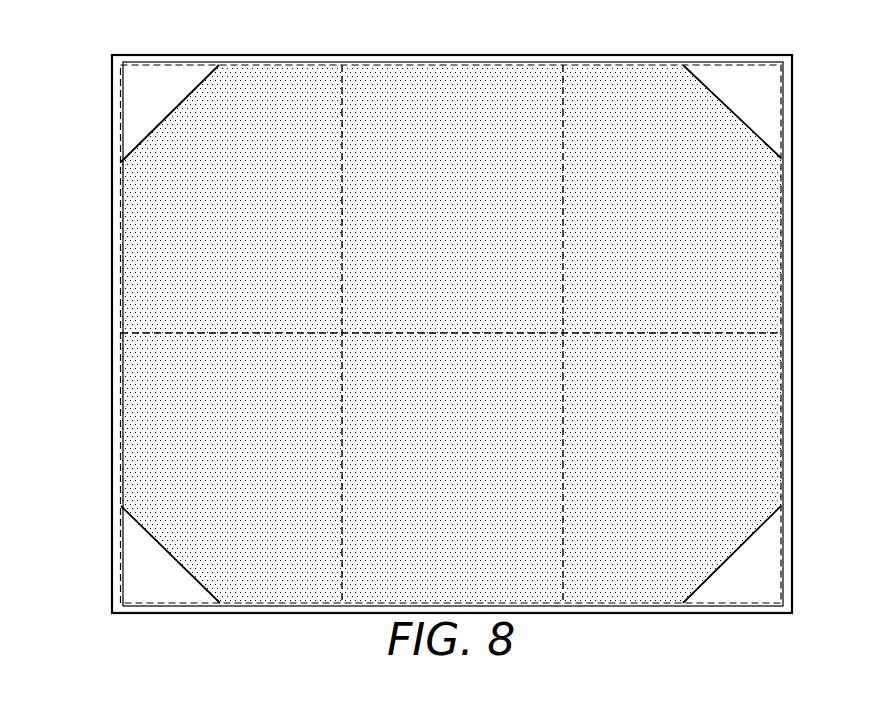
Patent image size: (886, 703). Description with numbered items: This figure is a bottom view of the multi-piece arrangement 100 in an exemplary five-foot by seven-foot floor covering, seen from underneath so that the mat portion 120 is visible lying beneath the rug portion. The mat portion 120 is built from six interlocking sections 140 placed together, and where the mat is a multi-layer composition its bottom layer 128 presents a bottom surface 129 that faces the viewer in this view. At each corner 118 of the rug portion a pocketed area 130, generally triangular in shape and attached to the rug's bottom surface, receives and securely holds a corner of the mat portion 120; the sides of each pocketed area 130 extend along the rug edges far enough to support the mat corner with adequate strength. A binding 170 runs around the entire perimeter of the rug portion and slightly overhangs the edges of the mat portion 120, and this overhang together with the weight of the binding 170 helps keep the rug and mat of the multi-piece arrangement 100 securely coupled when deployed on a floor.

The multi-piece arrangement 100 is at (238, 622).
The corner 118 is at (131, 558).
The mat portion 120 is at (626, 106).
The bottom layer 128 is at (497, 98).
The bottom surface 129 is at (170, 473).
The pocketed area 130 is at (153, 572).
The interlocking section 140 is at (165, 290).
The binding 170 is at (788, 202).